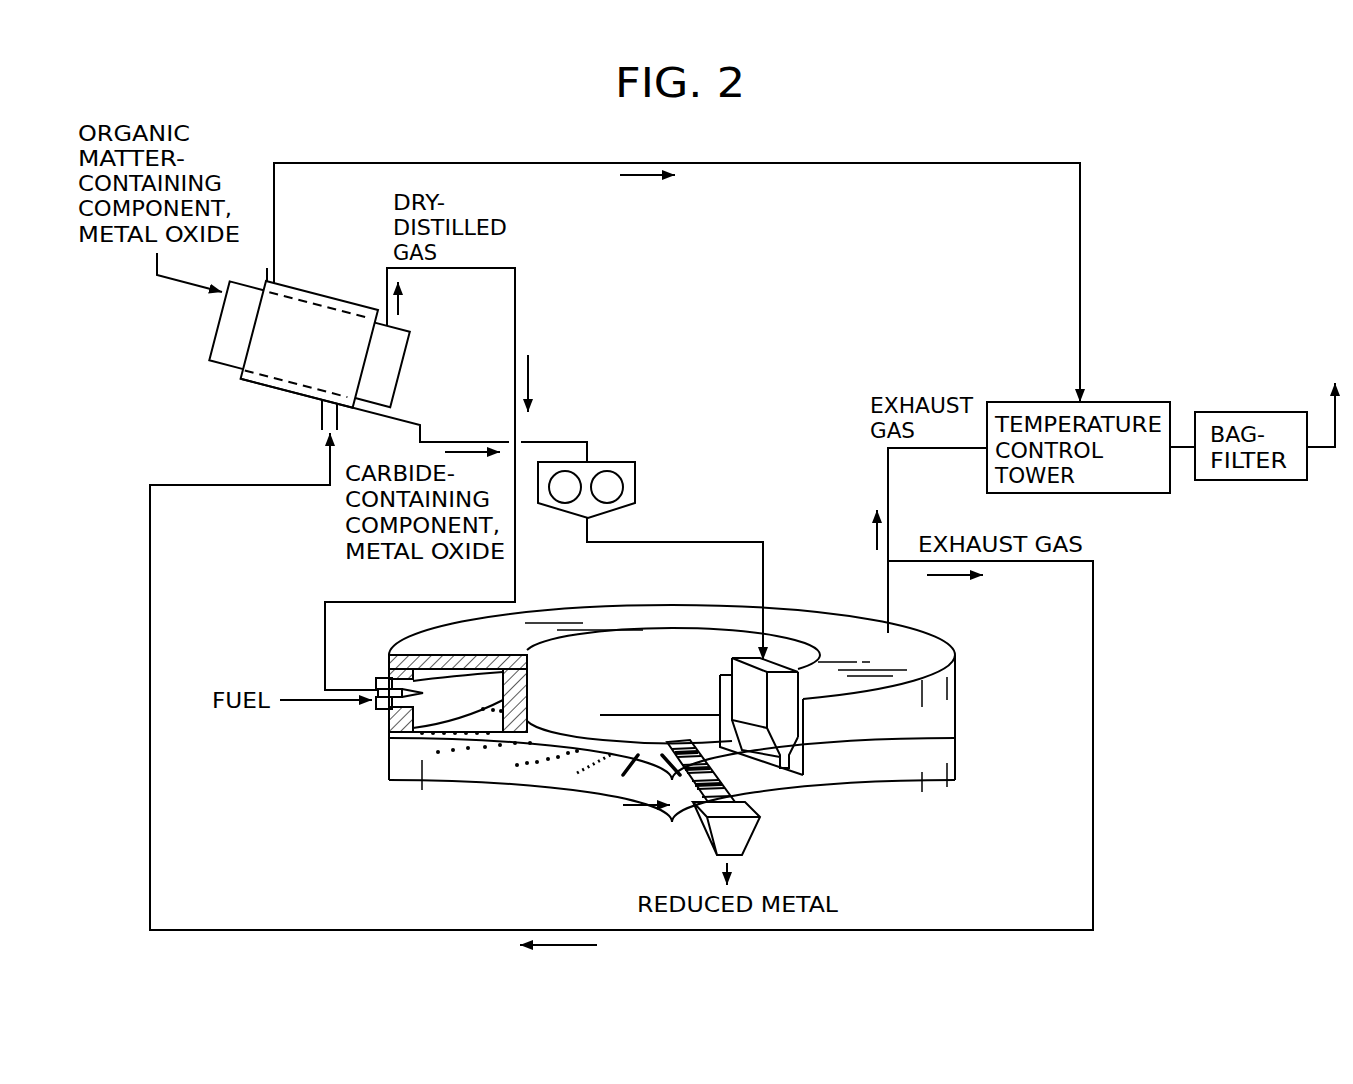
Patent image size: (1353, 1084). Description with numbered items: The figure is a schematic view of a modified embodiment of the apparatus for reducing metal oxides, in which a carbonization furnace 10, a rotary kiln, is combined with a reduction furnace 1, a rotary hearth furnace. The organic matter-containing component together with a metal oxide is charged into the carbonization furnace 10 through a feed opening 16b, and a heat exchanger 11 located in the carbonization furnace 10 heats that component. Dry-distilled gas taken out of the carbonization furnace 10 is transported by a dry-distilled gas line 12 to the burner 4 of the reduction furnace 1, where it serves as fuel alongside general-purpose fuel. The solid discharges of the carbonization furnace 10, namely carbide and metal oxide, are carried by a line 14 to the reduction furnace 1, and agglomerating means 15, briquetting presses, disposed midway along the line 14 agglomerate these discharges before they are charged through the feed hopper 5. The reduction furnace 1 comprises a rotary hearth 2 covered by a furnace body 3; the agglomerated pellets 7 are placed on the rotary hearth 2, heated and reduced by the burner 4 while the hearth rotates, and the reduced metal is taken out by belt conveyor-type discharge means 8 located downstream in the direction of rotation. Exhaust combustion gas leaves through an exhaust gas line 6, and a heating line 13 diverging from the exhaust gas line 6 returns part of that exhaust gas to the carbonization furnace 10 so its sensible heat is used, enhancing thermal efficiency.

The reduction furnace 1 is at (965, 657).
The rotary hearth 2 is at (462, 790).
The furnace body 3 is at (945, 705).
The burner 4 is at (372, 705).
The feed hopper 5 is at (728, 658).
The exhaust gas line 6 is at (893, 607).
The carbonaceous material-filled iron oxide pellets 7 is at (596, 763).
The discharge means 8 is at (713, 765).
The carbonization furnace 10 is at (605, 302).
The heat exchanger 11 is at (281, 370).
The dry-distilled gas line 12 is at (518, 300).
The heating line 13 is at (1093, 703).
The line 14 is at (562, 442).
The agglomerating means 15 is at (640, 470).
The feed opening 16b is at (226, 305).